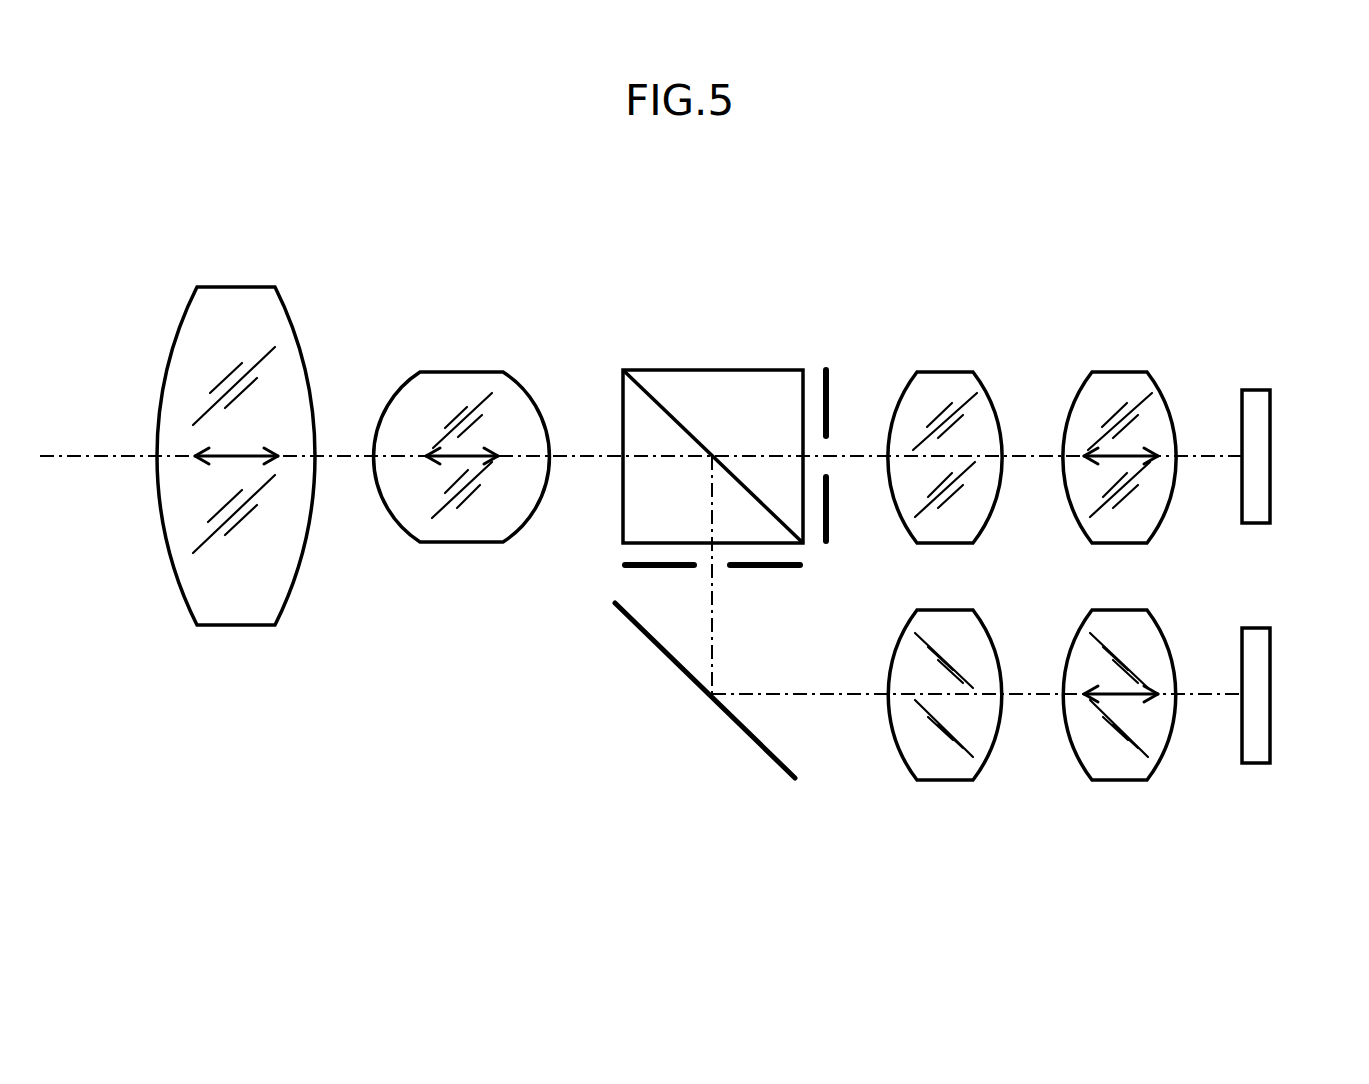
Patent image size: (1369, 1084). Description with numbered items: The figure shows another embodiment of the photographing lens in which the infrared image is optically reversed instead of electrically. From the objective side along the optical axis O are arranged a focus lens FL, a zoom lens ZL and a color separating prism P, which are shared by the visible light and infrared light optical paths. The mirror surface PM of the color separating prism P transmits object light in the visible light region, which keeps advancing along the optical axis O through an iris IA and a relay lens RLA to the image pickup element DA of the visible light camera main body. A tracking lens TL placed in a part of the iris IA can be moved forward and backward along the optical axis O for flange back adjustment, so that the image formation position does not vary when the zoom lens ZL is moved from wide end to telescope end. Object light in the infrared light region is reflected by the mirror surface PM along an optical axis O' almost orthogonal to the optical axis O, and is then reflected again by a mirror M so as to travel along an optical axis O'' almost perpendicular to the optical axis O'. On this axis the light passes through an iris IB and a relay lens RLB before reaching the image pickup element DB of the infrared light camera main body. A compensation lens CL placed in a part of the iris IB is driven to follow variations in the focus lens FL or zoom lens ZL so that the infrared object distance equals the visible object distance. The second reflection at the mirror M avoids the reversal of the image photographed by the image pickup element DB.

The optical axis O is at (641, 416).
The focus lens FL is at (233, 287).
The zoom lens ZL is at (462, 372).
The color separating prism P is at (712, 370).
The mirror surface PM is at (663, 412).
The iris IA is at (826, 367).
The iris IB is at (803, 565).
The mirror M is at (640, 628).
The optical axis O' is at (756, 575).
The optical axis O'' is at (977, 735).
The relay lens RLA is at (1036, 376).
The tracking lens TL is at (1119, 416).
The image pickup element DA is at (1270, 457).
The image pickup element DB is at (1270, 694).
The relay lens RLB is at (1036, 777).
The compensation lens CL is at (1119, 738).